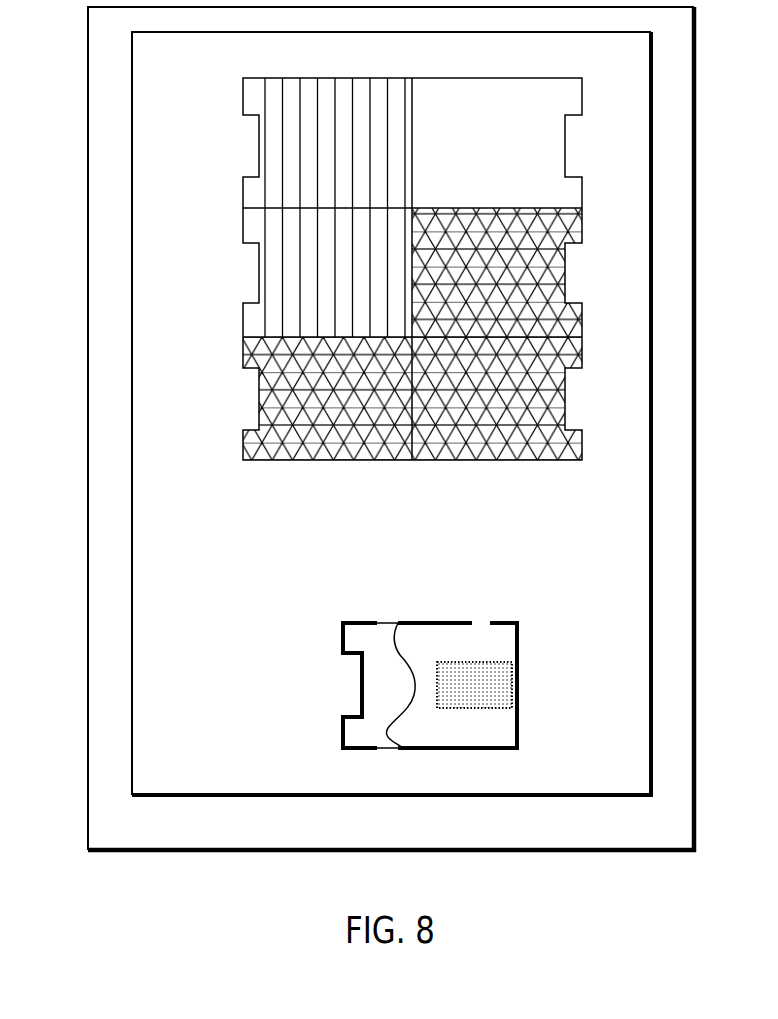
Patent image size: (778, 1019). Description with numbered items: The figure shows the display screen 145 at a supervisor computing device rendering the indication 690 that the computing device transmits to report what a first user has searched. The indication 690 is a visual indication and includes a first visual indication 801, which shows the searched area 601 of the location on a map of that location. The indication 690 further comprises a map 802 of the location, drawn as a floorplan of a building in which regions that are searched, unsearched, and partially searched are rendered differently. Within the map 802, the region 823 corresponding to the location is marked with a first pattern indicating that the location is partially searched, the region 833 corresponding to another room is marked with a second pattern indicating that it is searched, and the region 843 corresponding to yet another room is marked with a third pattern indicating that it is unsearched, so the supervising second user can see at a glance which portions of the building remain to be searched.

The display screen 145 is at (88, 427).
The indication 690 is at (132, 322).
The map 802 is at (243, 96).
The region 843 is at (553, 143).
The region 823 is at (258, 272).
The region 833 is at (258, 400).
The first visual indication 801 is at (343, 640).
The area 601 is at (380, 633).